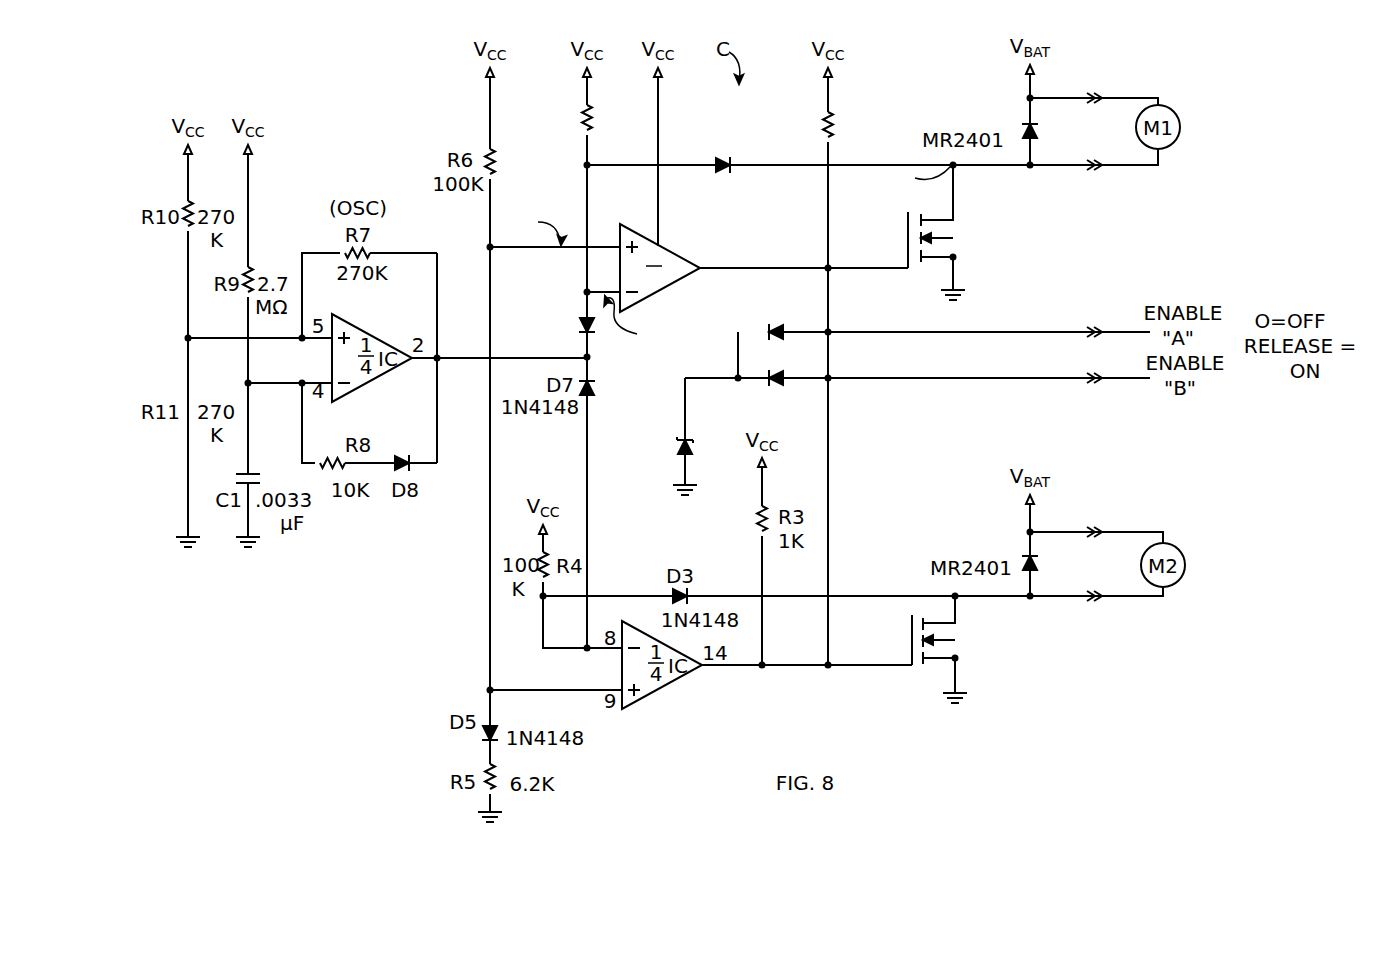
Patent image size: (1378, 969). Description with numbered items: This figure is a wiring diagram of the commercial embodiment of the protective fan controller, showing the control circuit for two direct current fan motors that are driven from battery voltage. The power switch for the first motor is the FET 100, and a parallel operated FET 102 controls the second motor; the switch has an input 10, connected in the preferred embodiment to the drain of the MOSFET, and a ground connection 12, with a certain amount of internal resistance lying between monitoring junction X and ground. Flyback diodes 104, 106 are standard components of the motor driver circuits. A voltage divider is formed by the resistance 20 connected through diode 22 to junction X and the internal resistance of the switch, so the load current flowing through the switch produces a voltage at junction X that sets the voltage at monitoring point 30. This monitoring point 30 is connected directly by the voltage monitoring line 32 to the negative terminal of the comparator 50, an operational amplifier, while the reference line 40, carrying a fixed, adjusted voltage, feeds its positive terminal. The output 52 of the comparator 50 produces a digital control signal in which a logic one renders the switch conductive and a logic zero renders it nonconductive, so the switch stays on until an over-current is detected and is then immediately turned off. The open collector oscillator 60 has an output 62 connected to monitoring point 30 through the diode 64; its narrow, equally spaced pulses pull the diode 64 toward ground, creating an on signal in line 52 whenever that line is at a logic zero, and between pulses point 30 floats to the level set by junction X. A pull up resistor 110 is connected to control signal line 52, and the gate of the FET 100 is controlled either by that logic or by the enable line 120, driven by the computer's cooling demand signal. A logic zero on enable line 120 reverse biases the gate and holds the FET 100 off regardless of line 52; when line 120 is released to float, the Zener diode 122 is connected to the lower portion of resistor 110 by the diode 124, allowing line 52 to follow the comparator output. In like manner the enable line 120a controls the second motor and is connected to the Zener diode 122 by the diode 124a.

The input 10 is at (952, 187).
The ground connection 12 is at (962, 273).
The resistance 20 is at (588, 128).
The diode 22 is at (724, 163).
The monitoring point 30 is at (588, 167).
The voltage monitoring line 32 is at (586, 206).
The reference line 40 is at (540, 247).
The comparator 50 is at (666, 292).
The output 52 is at (758, 268).
The oscillator 60 is at (436, 442).
The output 62 is at (445, 362).
The diode 64 is at (586, 317).
The FET 100 is at (904, 239).
The FET 102 is at (955, 640).
The flyback diode 104 is at (1024, 132).
The flyback diode 106 is at (1024, 555).
The pull up resistor 110 is at (834, 120).
The enable line 120 is at (828, 306).
The enable line 120a is at (892, 378).
The Zener diode 122 is at (689, 446).
The diode 124 is at (770, 327).
The diode 124a is at (786, 374).